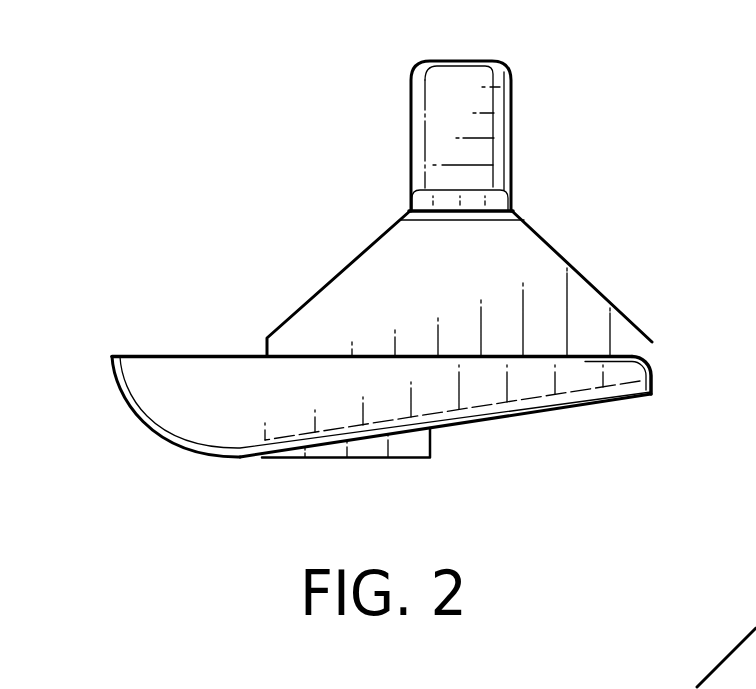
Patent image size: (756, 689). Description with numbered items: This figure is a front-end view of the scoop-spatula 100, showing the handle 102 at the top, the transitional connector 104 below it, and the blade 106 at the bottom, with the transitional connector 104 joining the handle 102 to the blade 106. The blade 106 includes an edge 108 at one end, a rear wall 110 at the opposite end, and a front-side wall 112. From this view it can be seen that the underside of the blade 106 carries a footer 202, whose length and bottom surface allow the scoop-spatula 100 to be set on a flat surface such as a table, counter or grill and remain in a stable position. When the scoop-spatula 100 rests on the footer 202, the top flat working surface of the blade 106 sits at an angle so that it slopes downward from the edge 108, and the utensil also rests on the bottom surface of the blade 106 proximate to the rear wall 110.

The scoop-spatula 100 is at (260, 131).
The handle 102 is at (409, 128).
The transitional connector 104 is at (365, 251).
The blade 106 is at (238, 400).
The edge 108 is at (653, 386).
The rear wall 110 is at (112, 390).
The front-side wall 112 is at (205, 428).
The footer 202 is at (433, 443).